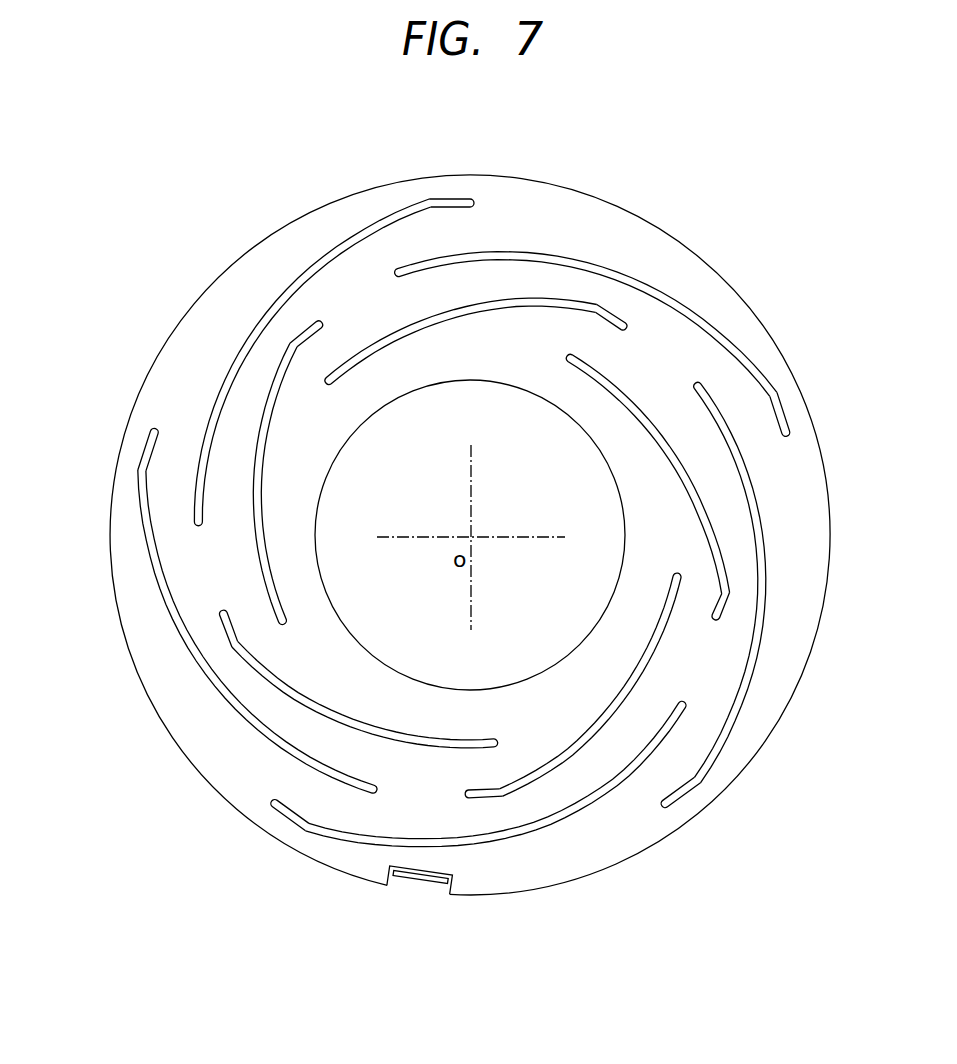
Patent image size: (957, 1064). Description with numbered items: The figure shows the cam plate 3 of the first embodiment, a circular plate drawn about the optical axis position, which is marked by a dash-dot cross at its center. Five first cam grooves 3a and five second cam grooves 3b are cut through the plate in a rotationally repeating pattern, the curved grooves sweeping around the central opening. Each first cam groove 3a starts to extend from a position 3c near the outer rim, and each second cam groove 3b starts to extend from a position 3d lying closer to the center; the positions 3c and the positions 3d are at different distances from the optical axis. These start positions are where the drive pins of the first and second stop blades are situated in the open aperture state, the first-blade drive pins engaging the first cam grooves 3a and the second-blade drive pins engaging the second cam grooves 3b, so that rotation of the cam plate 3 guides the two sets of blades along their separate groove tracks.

The cam plate 3 is at (222, 310).
The first cam grooves 3a is at (310, 270).
The second cam grooves 3b is at (429, 337).
The positions from which the first cam grooves start to extend 3c is at (468, 198).
The positions from which the second cam grooves start to extend 3d is at (597, 303).